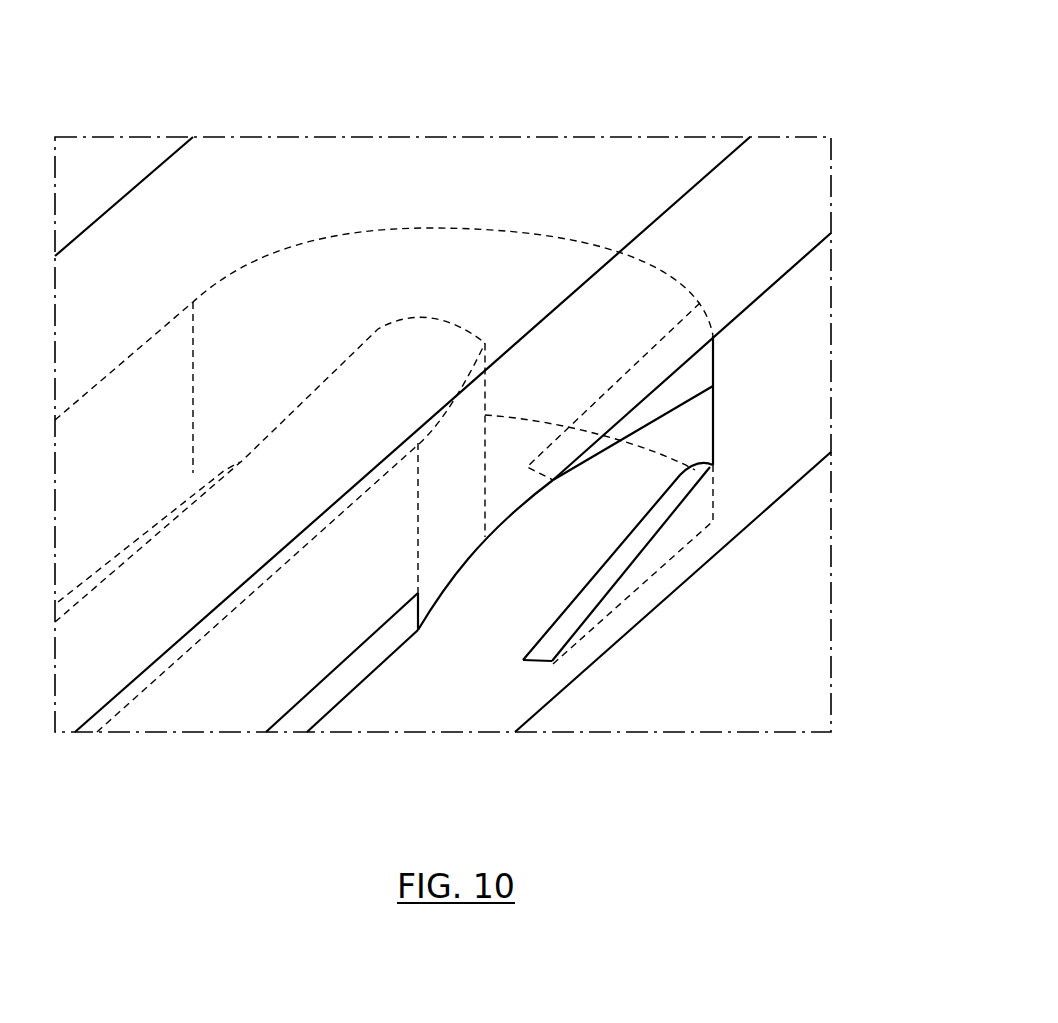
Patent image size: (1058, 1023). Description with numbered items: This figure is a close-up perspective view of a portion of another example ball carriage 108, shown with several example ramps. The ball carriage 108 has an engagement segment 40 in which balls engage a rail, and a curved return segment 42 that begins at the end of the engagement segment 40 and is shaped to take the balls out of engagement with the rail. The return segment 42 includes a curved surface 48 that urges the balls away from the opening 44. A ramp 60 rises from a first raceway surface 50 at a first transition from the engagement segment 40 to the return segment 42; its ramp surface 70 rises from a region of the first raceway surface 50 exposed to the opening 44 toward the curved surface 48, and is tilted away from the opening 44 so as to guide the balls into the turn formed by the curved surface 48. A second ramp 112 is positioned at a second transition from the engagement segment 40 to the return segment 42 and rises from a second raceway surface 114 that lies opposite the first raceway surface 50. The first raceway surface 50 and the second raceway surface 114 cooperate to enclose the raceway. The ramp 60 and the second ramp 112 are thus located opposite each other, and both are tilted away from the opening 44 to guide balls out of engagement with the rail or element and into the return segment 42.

The ball carriage 108 is at (831, 104).
The return segment 42 is at (578, 300).
The curved surface 48 is at (648, 312).
The second ramp 112 is at (722, 358).
The opening 44 is at (722, 407).
The ramp 60 is at (700, 528).
The ramp surface 70 is at (643, 535).
The engagement segment 40 is at (421, 678).
The first raceway surface 50 is at (453, 699).
The second raceway surface 114 is at (290, 640).